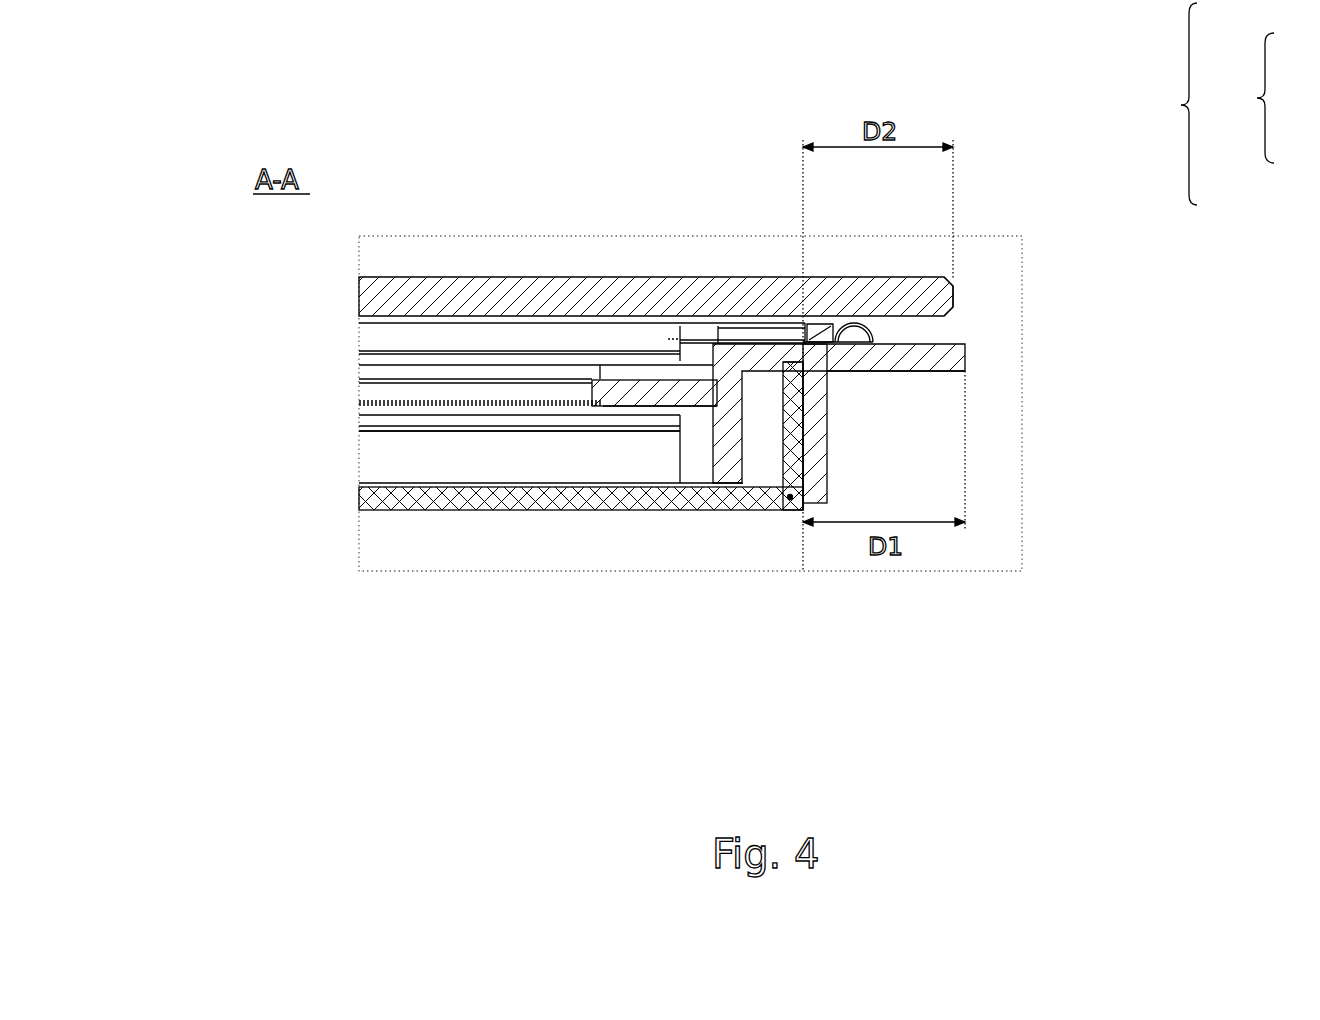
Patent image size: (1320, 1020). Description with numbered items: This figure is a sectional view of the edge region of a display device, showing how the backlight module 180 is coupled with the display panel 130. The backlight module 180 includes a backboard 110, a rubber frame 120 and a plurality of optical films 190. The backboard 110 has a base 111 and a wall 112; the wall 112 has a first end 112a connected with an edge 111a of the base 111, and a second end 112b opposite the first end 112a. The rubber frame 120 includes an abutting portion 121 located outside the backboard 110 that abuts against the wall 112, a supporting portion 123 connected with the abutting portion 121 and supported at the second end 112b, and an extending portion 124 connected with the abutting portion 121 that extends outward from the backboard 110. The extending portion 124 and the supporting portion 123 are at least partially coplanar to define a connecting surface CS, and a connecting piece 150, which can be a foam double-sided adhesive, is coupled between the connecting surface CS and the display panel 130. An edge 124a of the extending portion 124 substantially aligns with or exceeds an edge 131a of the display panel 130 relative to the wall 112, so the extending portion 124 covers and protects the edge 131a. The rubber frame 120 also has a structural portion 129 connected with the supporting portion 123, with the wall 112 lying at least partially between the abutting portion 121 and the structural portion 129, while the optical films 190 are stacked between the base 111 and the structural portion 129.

The backboard 110 is at (603, 429).
The base 111 is at (620, 512).
The wall 112 is at (815, 358).
The edge of the base 111a is at (790, 500).
The first end of the wall 112a is at (798, 505).
The second end of the wall 112b is at (790, 362).
The rubber frame 120 is at (1261, 98).
The abutting portion 121 is at (827, 428).
The supporting portion 123 is at (796, 343).
The extending portion 124 is at (925, 347).
The edge of the extending portion 124a is at (965, 356).
The structural portion 129 is at (604, 402).
The display panel 130 is at (640, 277).
The edge of the display panel 131a is at (957, 295).
The connecting piece 150 is at (823, 340).
The connecting surface CS is at (860, 326).
The backlight module 180 is at (1192, 104).
The optical films 190 is at (490, 472).